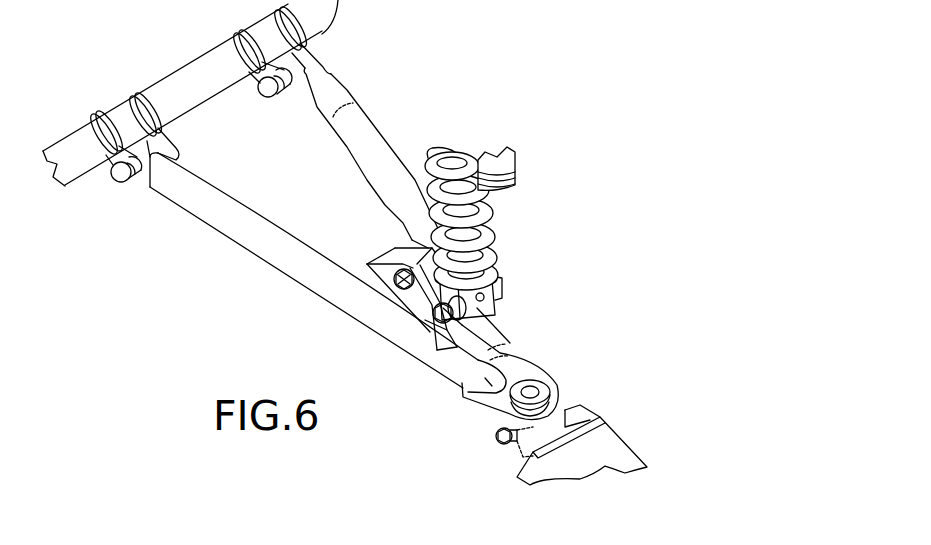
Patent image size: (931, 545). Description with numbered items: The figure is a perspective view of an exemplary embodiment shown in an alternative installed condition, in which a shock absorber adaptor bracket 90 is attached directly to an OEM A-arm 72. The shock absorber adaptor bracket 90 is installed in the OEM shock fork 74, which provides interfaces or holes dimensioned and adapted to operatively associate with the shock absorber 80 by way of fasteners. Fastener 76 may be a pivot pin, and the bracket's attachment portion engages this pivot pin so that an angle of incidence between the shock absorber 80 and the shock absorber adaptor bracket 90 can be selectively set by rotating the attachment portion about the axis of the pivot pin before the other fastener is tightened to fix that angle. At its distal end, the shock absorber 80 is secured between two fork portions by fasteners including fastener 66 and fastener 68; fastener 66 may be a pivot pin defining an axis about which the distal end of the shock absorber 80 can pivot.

The fastener 66 is at (415, 320).
The fastener 68 is at (503, 288).
The OEM A-arm 72 is at (267, 248).
The OEM shock fork 74 is at (380, 262).
The fastener 76 is at (393, 278).
The shock absorber 80 is at (490, 252).
The shock absorber adaptor bracket 90 is at (510, 313).